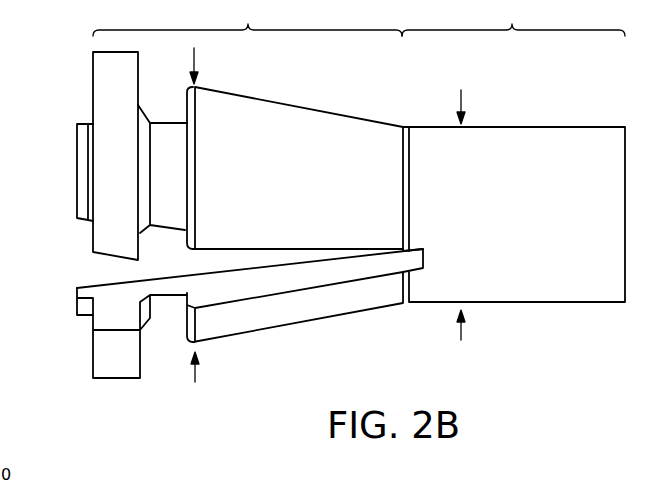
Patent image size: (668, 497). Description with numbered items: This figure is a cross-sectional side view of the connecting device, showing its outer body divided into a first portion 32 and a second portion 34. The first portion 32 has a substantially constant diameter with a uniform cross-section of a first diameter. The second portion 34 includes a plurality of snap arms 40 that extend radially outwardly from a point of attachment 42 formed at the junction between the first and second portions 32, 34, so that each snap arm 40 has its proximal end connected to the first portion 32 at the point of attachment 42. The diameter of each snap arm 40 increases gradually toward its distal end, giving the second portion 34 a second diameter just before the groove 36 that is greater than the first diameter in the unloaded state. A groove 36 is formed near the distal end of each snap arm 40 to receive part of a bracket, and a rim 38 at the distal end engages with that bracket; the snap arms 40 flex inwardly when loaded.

The first portion 32 is at (513, 175).
The second portion 34 is at (248, 124).
The groove 36 is at (170, 346).
The rim 38 is at (103, 77).
The snap arm 40 is at (313, 228).
The point of attachment 42 is at (430, 258).